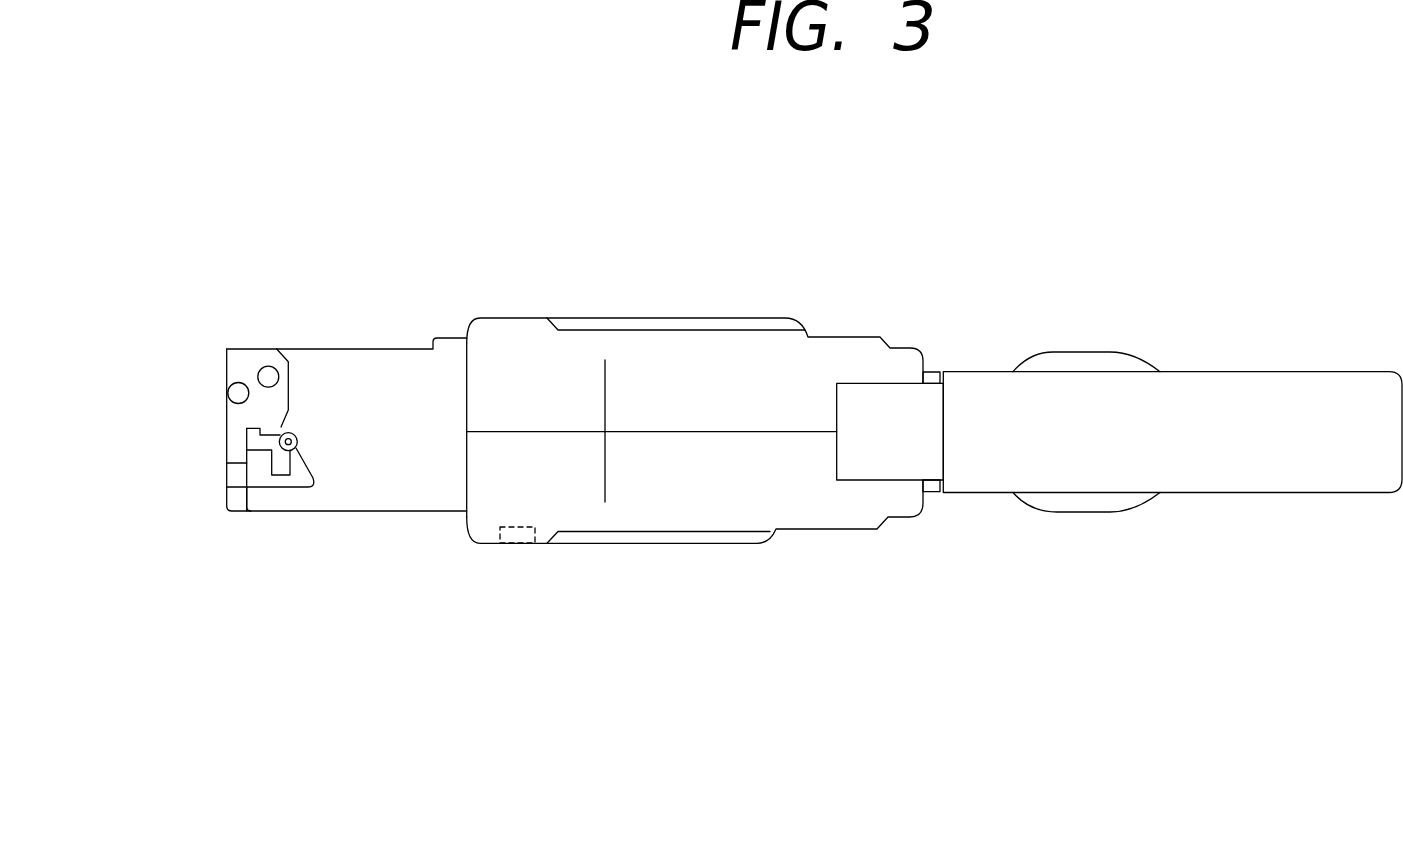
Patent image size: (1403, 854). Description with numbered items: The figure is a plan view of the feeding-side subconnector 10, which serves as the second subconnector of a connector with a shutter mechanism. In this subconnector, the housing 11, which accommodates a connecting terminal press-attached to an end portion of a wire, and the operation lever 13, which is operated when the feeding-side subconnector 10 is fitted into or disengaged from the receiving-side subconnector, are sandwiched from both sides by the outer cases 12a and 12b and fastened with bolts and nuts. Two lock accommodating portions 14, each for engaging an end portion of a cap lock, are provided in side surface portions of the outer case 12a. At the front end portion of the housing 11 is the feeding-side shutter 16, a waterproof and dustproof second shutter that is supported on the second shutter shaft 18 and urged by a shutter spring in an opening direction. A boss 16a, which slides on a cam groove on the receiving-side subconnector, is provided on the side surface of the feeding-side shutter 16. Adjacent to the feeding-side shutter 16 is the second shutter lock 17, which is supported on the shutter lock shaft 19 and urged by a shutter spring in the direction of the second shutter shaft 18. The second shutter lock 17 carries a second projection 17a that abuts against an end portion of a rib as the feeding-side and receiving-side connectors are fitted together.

The feeding-side subconnector 10 is at (1277, 218).
The housing 11 is at (413, 360).
The outer case 12a is at (830, 512).
The outer case 12b is at (773, 345).
The operation lever 13 is at (1193, 383).
The lock accommodating portion 14 is at (518, 548).
The feeding-side shutter 16 is at (208, 430).
The boss 16a is at (228, 393).
The second shutter lock 17 is at (310, 502).
The second projection 17a is at (297, 468).
The second shutter shaft 18 is at (264, 366).
The shutter lock shaft 19 is at (297, 438).